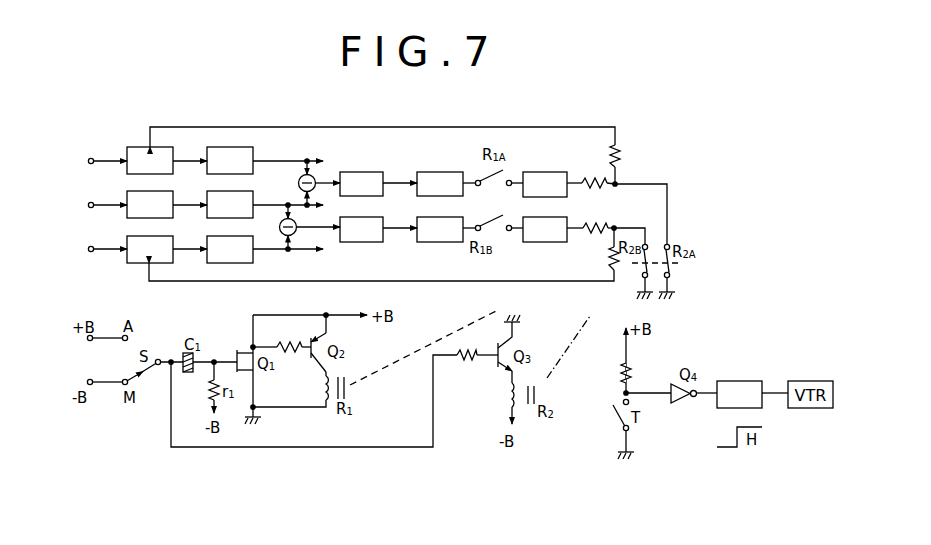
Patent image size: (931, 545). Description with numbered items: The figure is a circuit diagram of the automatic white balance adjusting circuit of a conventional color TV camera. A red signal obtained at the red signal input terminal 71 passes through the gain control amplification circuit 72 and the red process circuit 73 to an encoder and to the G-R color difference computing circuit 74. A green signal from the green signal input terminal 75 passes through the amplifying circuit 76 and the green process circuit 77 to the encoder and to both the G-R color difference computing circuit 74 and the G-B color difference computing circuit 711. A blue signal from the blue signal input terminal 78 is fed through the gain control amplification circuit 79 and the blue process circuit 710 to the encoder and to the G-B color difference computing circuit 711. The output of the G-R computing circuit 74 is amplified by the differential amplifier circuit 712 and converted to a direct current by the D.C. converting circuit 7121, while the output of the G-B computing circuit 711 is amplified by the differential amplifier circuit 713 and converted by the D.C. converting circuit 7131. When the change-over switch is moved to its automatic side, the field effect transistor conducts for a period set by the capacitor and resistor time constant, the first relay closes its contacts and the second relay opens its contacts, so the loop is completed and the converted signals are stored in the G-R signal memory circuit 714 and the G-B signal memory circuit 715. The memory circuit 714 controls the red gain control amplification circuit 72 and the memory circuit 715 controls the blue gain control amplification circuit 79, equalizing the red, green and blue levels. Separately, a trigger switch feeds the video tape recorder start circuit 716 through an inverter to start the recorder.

The red signal input terminal 71 is at (95, 161).
The gain control amplification circuit 72 is at (150, 160).
The red process circuit 73 is at (230, 160).
The G-R color difference computing circuit 74 is at (312, 177).
The green signal input terminal 75 is at (95, 205).
The amplifying circuit 76 is at (150, 204).
The green process circuit 77 is at (230, 204).
The blue signal input terminal 78 is at (95, 249).
The gain control amplification circuit 79 is at (150, 249).
The blue process circuit 710 is at (230, 249).
The G-B color difference computing circuit 711 is at (283, 234).
The differential amplifier circuit 712 is at (361, 184).
The D.C. converting circuit 7121 is at (440, 184).
The differential amplifier circuit 713 is at (361, 229).
The D.C. converting circuit 7131 is at (440, 229).
The G-R signal memory circuit 714 is at (545, 184).
The G-B signal memory circuit 715 is at (545, 229).
The VTR start circuit 716 is at (739, 394).